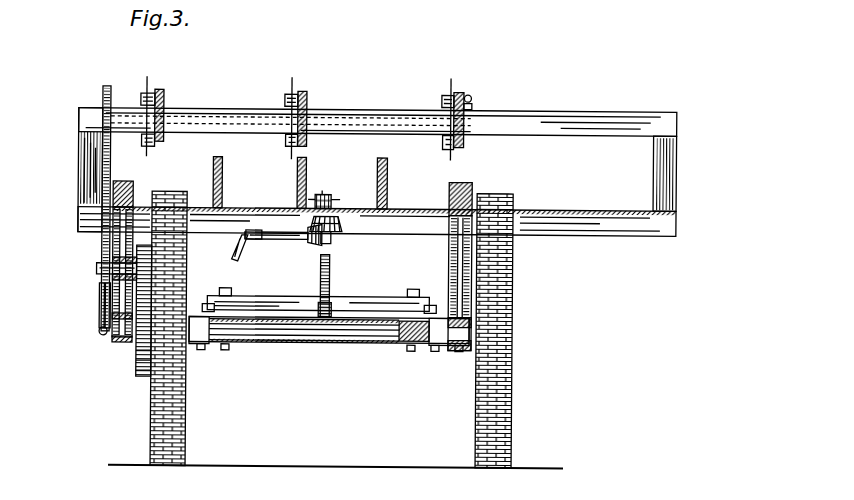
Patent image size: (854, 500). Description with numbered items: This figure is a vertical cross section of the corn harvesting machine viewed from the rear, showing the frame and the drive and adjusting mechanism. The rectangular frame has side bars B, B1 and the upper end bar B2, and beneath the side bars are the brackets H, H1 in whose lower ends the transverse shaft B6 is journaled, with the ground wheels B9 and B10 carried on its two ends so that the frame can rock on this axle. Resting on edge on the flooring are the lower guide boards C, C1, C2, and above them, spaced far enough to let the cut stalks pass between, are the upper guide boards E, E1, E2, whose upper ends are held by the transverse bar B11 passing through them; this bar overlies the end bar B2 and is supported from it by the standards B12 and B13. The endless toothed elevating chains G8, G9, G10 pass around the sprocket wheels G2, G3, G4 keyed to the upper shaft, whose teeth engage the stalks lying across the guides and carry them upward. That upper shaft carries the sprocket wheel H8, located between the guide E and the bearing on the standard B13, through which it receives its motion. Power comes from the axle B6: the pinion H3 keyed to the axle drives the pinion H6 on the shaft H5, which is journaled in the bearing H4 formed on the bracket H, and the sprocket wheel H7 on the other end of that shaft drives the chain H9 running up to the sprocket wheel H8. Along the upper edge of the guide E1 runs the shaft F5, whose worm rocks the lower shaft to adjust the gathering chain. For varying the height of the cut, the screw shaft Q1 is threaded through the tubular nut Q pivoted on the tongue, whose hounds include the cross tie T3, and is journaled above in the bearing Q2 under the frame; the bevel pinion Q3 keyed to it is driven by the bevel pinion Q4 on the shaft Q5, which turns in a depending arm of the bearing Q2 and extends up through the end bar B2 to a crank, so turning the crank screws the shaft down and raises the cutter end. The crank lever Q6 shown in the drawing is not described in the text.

The side bar B is at (133, 190).
The side bar B1 is at (472, 185).
The end bar B2 is at (80, 225).
The transverse shaft B6 is at (363, 340).
The ground wheel B9 is at (180, 264).
The ground wheel B10 is at (500, 268).
The transverse bar B11 is at (575, 121).
The standard B12 is at (668, 172).
The standard B13 is at (98, 150).
The guide board C is at (222, 172).
The guide board C1 is at (306, 170).
The guide board C2 is at (387, 170).
The guide board E is at (160, 96).
The guide board E1 is at (306, 100).
The guide board E2 is at (463, 96).
The shaft F5 is at (471, 99).
The sprocket wheel G2 is at (146, 97).
The sprocket wheel G3 is at (291, 95).
The sprocket wheel G4 is at (450, 96).
The elevating chain G8 is at (152, 148).
The elevating chain G9 is at (288, 147).
The elevating chain G10 is at (446, 149).
The bracket H is at (452, 258).
The bracket H1 is at (108, 330).
The pinion H3 is at (140, 362).
The bearing H4 is at (100, 298).
The shaft H5 is at (97, 270).
The pinion H6 is at (145, 249).
The sprocket wheel H7 is at (106, 312).
The sprocket wheel H8 is at (102, 94).
The drive chain H9 is at (122, 272).
The tubular nut Q is at (332, 308).
The shaft Q1 is at (330, 280).
The bearing Q2 is at (334, 204).
The bevel pinion Q3 is at (343, 230).
The bevel pinion Q4 is at (311, 247).
The shaft Q5 is at (268, 242).
The crank lever Q6 is at (236, 262).
The cross tie T3 is at (288, 305).